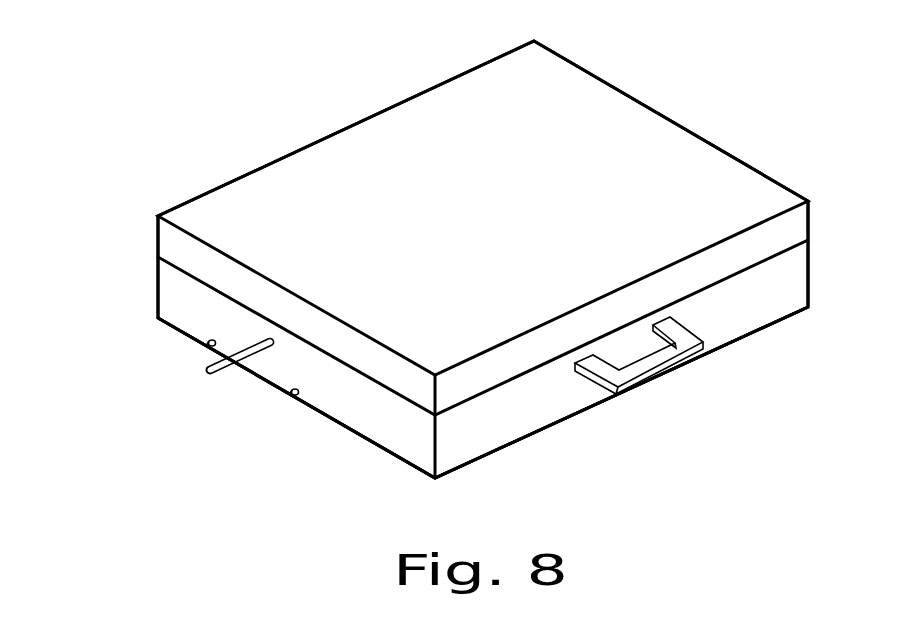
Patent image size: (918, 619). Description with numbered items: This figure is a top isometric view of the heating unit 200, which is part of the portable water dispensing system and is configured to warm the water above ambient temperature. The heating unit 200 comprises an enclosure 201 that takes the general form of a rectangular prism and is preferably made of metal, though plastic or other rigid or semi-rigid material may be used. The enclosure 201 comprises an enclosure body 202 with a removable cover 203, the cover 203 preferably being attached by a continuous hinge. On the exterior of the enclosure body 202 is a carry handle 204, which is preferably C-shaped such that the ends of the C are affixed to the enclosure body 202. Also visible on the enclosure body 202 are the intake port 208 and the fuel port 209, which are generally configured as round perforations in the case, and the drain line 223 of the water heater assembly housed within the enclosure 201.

The heating unit 200 is at (165, 148).
The enclosure 201 is at (435, 478).
The enclosure body 202 is at (527, 412).
The removable cover 203 is at (685, 150).
The carry handle 204 is at (687, 343).
The intake port 208 is at (206, 345).
The fuel port 209 is at (290, 396).
The drain line 223 is at (213, 373).